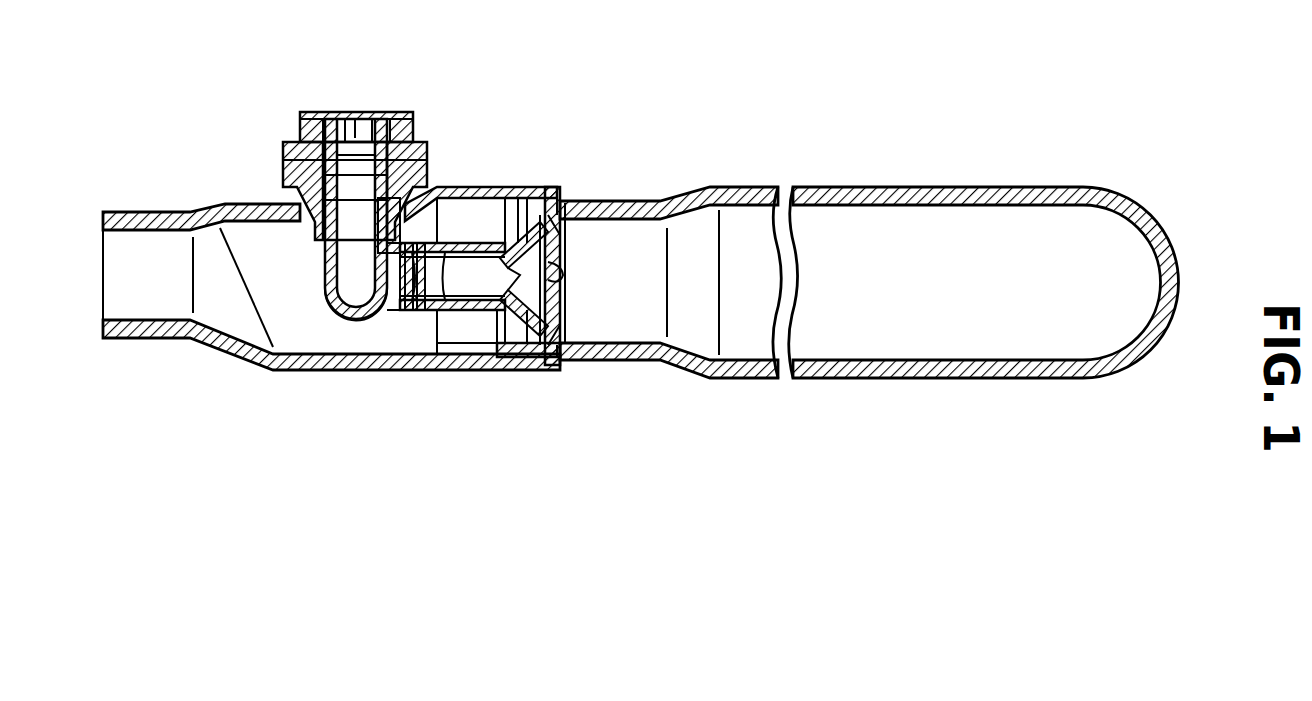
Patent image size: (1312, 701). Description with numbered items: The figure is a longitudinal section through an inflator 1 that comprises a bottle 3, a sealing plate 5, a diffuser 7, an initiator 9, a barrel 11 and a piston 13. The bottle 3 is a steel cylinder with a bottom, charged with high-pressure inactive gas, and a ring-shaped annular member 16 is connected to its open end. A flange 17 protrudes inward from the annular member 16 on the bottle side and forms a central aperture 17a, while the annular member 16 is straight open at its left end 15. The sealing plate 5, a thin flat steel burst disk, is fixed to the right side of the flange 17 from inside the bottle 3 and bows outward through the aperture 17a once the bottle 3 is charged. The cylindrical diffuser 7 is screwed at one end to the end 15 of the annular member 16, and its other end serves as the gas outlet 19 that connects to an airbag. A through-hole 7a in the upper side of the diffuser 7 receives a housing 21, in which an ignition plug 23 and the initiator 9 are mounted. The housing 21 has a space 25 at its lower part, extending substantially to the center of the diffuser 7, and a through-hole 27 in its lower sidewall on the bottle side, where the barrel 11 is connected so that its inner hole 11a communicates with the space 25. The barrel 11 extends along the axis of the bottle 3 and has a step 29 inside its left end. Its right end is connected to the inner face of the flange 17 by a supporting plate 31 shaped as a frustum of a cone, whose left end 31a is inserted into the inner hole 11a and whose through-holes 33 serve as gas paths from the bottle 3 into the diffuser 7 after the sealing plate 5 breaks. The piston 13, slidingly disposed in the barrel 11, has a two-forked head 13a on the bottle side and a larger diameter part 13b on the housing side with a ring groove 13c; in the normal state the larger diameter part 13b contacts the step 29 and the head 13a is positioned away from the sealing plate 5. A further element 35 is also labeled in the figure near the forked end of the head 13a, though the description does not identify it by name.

The inflator 1 is at (483, 133).
The bottle 3 is at (852, 187).
The sealing plate 5 is at (590, 195).
The diffuser 7 is at (460, 185).
The through-hole 7a is at (380, 155).
The initiator 9 is at (286, 198).
The barrel 11 is at (428, 310).
The inner hole 11a is at (408, 310).
The piston 13 is at (478, 330).
The head 13a is at (532, 357).
The larger diameter part 13b is at (455, 320).
The ring groove 13c is at (437, 185).
The left end 15 is at (491, 185).
The annular member 16 is at (561, 180).
The flange 17 is at (577, 197).
The aperture 17a is at (578, 360).
The outlet 19 is at (147, 320).
The housing 21 is at (284, 153).
The ignition plug 23 is at (350, 117).
The space 25 is at (325, 295).
The through-hole 27 is at (358, 320).
The step 29 is at (393, 300).
The supporting plate 31 is at (540, 185).
The left end 31a is at (518, 185).
The through-holes 33 is at (527, 185).
The seal member 35 is at (566, 270).